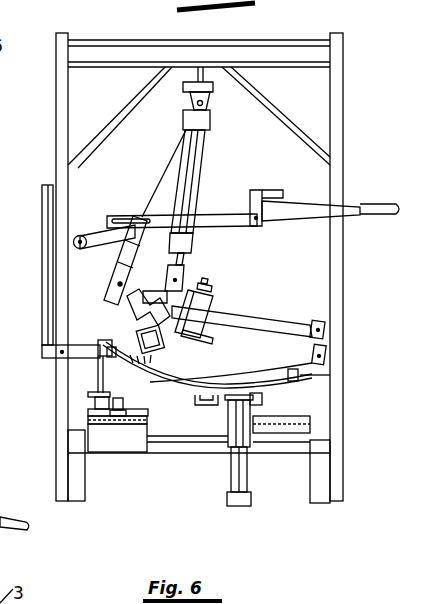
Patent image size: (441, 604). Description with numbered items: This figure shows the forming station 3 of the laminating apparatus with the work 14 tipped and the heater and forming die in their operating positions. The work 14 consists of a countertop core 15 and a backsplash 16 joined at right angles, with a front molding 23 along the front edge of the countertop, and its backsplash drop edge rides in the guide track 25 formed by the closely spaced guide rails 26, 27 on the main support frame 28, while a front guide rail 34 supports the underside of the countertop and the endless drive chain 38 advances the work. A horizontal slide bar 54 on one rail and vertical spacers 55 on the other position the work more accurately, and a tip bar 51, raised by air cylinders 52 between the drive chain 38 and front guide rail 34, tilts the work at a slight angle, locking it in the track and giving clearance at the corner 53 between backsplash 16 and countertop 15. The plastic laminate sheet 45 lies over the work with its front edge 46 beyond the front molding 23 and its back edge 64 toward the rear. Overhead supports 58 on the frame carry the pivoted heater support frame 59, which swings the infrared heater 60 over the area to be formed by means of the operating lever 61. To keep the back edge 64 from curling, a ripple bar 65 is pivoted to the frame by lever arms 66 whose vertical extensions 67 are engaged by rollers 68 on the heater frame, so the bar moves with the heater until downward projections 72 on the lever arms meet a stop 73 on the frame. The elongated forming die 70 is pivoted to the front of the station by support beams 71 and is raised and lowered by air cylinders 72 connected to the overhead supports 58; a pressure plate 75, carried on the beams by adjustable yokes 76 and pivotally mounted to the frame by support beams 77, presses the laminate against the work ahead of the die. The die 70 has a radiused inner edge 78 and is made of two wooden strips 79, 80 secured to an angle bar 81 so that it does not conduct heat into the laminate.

The forming station 3 is at (348, 172).
The work 14 is at (220, 378).
The countertop core 15 is at (181, 388).
The backsplash 16 is at (100, 378).
The front molding 23 is at (298, 377).
The guide track 25 is at (118, 445).
The guide rail 26 is at (97, 412).
The guide rail 27 is at (152, 446).
The main support frame 28 is at (66, 452).
The front guide rail 34 is at (260, 421).
The endless drive chain 38 is at (228, 428).
The plastic laminate sheet 45 is at (176, 382).
The front edge of laminate sheet 46 is at (300, 377).
The tip bar 51 is at (256, 392).
The air cylinders 52 is at (242, 476).
The corner 53 is at (125, 405).
The horizontal slide bar 54 is at (97, 388).
The vertical spacers 55 is at (128, 418).
The overhead supports 58 is at (115, 45).
The heater support frame 59 is at (165, 150).
The infrared heater 60 is at (135, 333).
The operating lever 61 is at (300, 207).
The back edge of plastic sheet 64 is at (106, 346).
The ripple bar 65 is at (110, 343).
The lever arms 66 is at (72, 350).
The vertical extensions 67 is at (47, 220).
The rollers 68 is at (76, 236).
The forming die 70 is at (151, 288).
The support beams 71 is at (250, 324).
The air cylinders 72 is at (206, 148).
The stop 73 is at (100, 397).
The pressure plate 75 is at (197, 334).
The adjustable yokes 76 is at (214, 291).
The support beams 77 is at (314, 322).
The inner edge 78 is at (119, 285).
The die strip 79 is at (128, 276).
The die strip 80 is at (163, 343).
The angle bar 81 is at (185, 295).